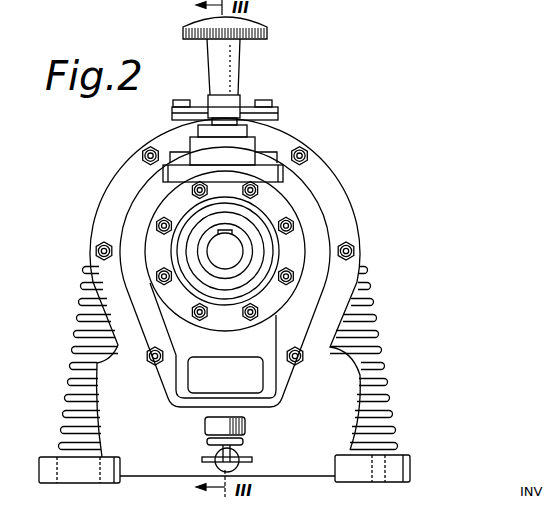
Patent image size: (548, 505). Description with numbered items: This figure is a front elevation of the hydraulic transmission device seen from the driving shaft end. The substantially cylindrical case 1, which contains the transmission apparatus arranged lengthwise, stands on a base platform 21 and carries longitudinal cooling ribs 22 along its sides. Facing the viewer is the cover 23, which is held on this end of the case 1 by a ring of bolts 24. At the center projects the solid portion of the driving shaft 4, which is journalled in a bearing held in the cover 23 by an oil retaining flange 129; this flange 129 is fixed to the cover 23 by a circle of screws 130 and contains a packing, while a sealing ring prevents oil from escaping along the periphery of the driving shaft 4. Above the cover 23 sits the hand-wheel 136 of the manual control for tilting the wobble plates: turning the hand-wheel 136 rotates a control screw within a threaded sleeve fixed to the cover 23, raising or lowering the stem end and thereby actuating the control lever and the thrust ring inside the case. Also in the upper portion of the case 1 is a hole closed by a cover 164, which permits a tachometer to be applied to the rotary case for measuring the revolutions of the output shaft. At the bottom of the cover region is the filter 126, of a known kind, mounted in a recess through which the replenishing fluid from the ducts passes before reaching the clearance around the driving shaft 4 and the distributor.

The case 1 is at (378, 294).
The driving shaft 4 is at (213, 243).
The base platform 21 is at (410, 455).
The longitudinal cooling ribs 22 is at (382, 361).
The cover 23 is at (333, 200).
The bolts 24 is at (312, 150).
The filter 126 is at (205, 426).
The oil retaining flange 129 is at (298, 243).
The screws 130 is at (160, 279).
The hand-wheel 136 is at (265, 31).
The cover 164 is at (280, 107).